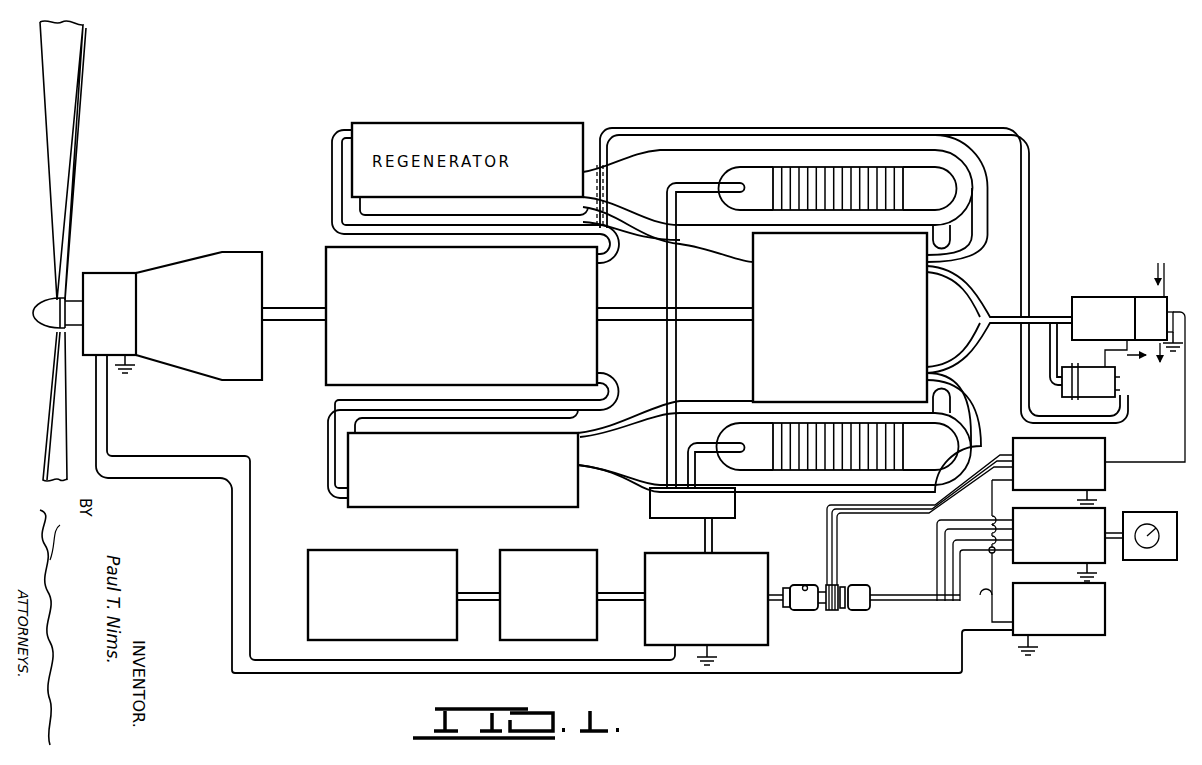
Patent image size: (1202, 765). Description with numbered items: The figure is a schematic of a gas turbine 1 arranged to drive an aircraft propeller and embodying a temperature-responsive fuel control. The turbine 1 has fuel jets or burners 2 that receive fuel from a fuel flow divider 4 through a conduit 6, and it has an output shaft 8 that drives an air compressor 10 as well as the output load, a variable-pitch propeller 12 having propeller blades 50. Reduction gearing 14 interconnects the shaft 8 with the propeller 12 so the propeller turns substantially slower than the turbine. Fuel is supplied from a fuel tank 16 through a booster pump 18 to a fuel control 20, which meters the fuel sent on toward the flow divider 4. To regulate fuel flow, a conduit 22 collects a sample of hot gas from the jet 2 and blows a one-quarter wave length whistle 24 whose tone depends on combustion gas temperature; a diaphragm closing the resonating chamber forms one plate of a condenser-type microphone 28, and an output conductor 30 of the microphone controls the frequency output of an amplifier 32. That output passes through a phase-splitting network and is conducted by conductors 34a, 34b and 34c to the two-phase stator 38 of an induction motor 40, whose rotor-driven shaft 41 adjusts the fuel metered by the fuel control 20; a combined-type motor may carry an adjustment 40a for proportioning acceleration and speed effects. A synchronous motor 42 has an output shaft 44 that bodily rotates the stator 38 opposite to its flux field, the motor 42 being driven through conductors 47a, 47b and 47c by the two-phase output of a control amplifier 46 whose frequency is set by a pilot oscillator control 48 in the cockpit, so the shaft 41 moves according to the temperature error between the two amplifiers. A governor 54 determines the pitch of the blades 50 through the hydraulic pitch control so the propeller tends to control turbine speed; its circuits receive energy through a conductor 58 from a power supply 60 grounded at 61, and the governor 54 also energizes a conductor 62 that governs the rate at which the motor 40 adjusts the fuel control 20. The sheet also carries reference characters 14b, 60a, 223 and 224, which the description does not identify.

The gas turbine 1 is at (757, 280).
The fuel jets or burners 2 is at (745, 180).
The fuel flow divider 4 is at (650, 505).
The conduit 6 is at (677, 190).
The output shaft 8 is at (285, 312).
The air compressor 10 is at (328, 380).
The propeller 12 is at (42, 300).
The reduction gearing 14 is at (246, 233).
The fuel line to fuel control 14b is at (636, 572).
The fuel tank 16 is at (322, 560).
The booster pump 18 is at (530, 557).
The fuel control 20 is at (672, 556).
The conduit 22 is at (997, 297).
The whistle 24 is at (1094, 306).
The condenser-type microphone 28 is at (1147, 297).
The output conductor 30 is at (1183, 391).
The amplifier 32 is at (1066, 478).
The conductor 34a is at (870, 493).
The conductor 34b is at (930, 493).
The conductor 34c is at (858, 513).
The two-phase stator 38 is at (800, 610).
The induction motor 40 is at (812, 613).
The adjustment 40a is at (806, 585).
The rotor-driven shaft 41 is at (780, 594).
The synchronous motor 42 is at (868, 571).
The output shaft 44 is at (846, 609).
The control amplifier 46 is at (1048, 498).
The conductor 47a is at (943, 556).
The conductor 47b is at (935, 544).
The conductor 47c is at (951, 570).
The pilot oscillator control 48 is at (1142, 514).
The propeller blades 50 is at (62, 99).
The governor 54 is at (118, 306).
The conductor 58 is at (868, 675).
The power supply 60 is at (1084, 628).
The conductor 60a is at (980, 595).
The ground 61 is at (1022, 644).
The conductor 62 is at (250, 472).
The sensing device 223 is at (1061, 384).
The conduit 224 is at (1108, 423).